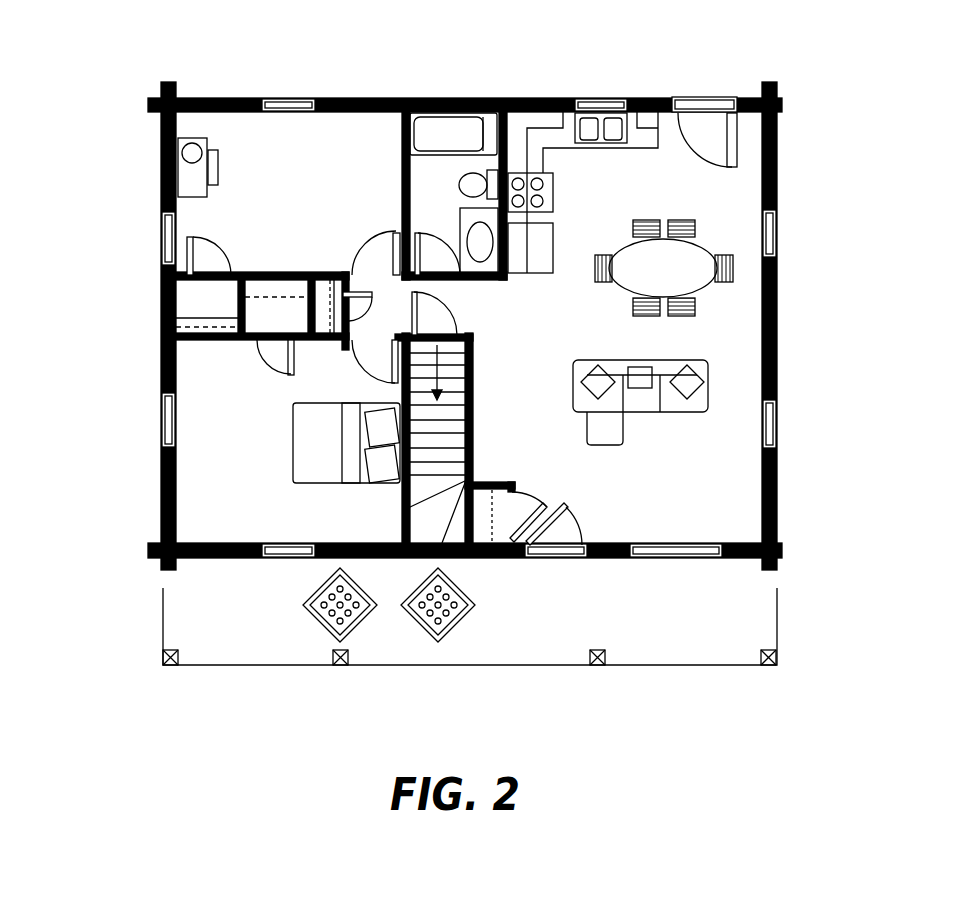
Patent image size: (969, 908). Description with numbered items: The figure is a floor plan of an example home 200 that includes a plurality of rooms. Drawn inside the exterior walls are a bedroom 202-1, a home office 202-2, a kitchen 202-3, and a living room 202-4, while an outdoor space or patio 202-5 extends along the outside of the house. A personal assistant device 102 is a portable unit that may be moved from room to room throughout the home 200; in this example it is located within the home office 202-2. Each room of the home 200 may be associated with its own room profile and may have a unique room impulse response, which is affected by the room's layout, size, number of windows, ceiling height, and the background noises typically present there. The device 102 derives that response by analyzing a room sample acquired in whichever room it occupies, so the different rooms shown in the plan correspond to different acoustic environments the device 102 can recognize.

The home 200 is at (128, 130).
The personal assistant device 102 is at (194, 146).
The bedroom 202-1 is at (258, 433).
The home office 202-2 is at (322, 152).
The kitchen 202-3 is at (665, 190).
The living room 202-4 is at (665, 440).
The outdoor space or patio 202-5 is at (253, 607).